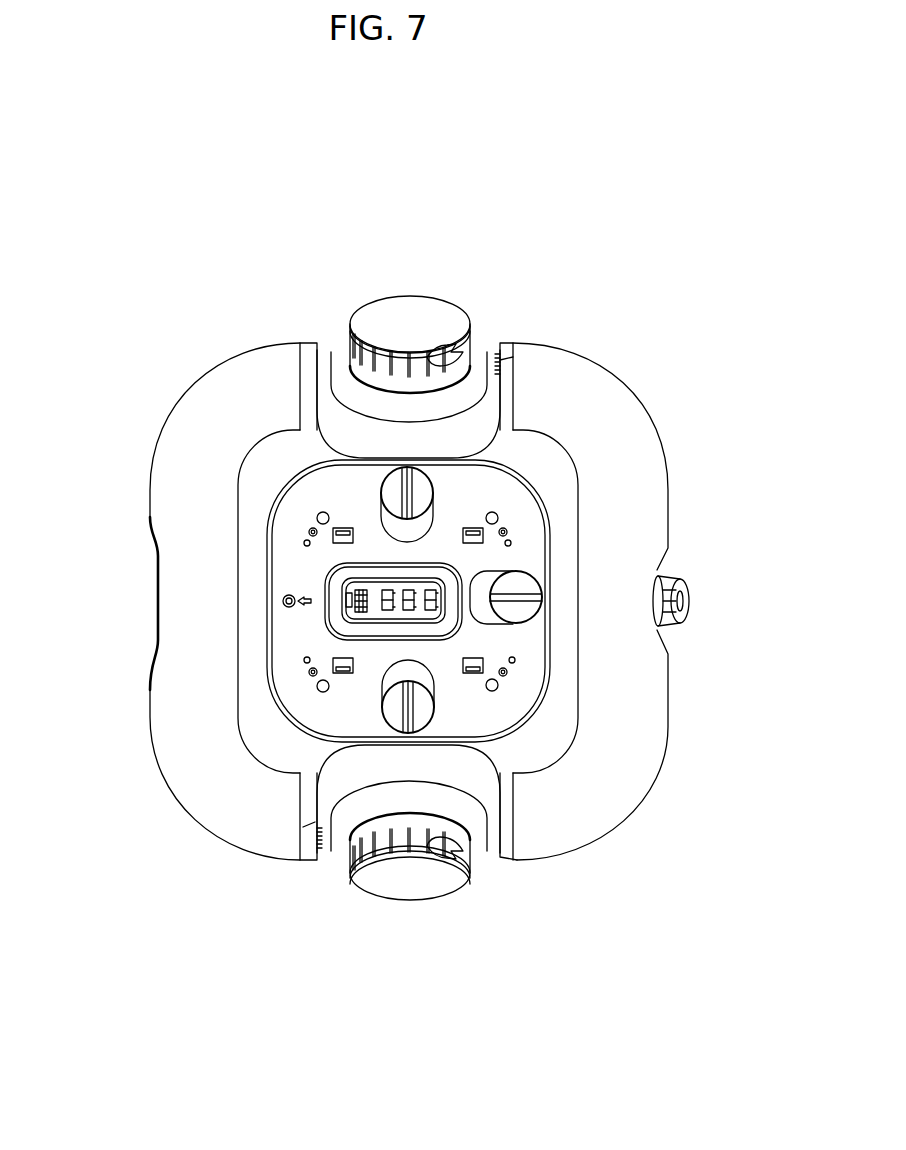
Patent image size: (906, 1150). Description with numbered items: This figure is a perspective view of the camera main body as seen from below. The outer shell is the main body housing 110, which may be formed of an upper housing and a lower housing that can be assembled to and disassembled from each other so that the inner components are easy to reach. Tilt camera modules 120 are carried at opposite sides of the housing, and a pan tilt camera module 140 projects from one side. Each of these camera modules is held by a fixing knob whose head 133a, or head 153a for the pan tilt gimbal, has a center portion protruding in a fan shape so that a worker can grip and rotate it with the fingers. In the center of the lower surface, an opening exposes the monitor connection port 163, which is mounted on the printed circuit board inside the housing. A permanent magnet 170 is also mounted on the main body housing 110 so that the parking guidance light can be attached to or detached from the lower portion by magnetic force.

The main body housing 110 is at (580, 827).
The tilt camera module 120 is at (403, 355).
The head 133a is at (397, 495).
The pan tilt camera module 140 is at (677, 607).
The head 153a is at (513, 591).
The monitor connection port 163 is at (433, 593).
The permanent magnet 170 is at (473, 673).